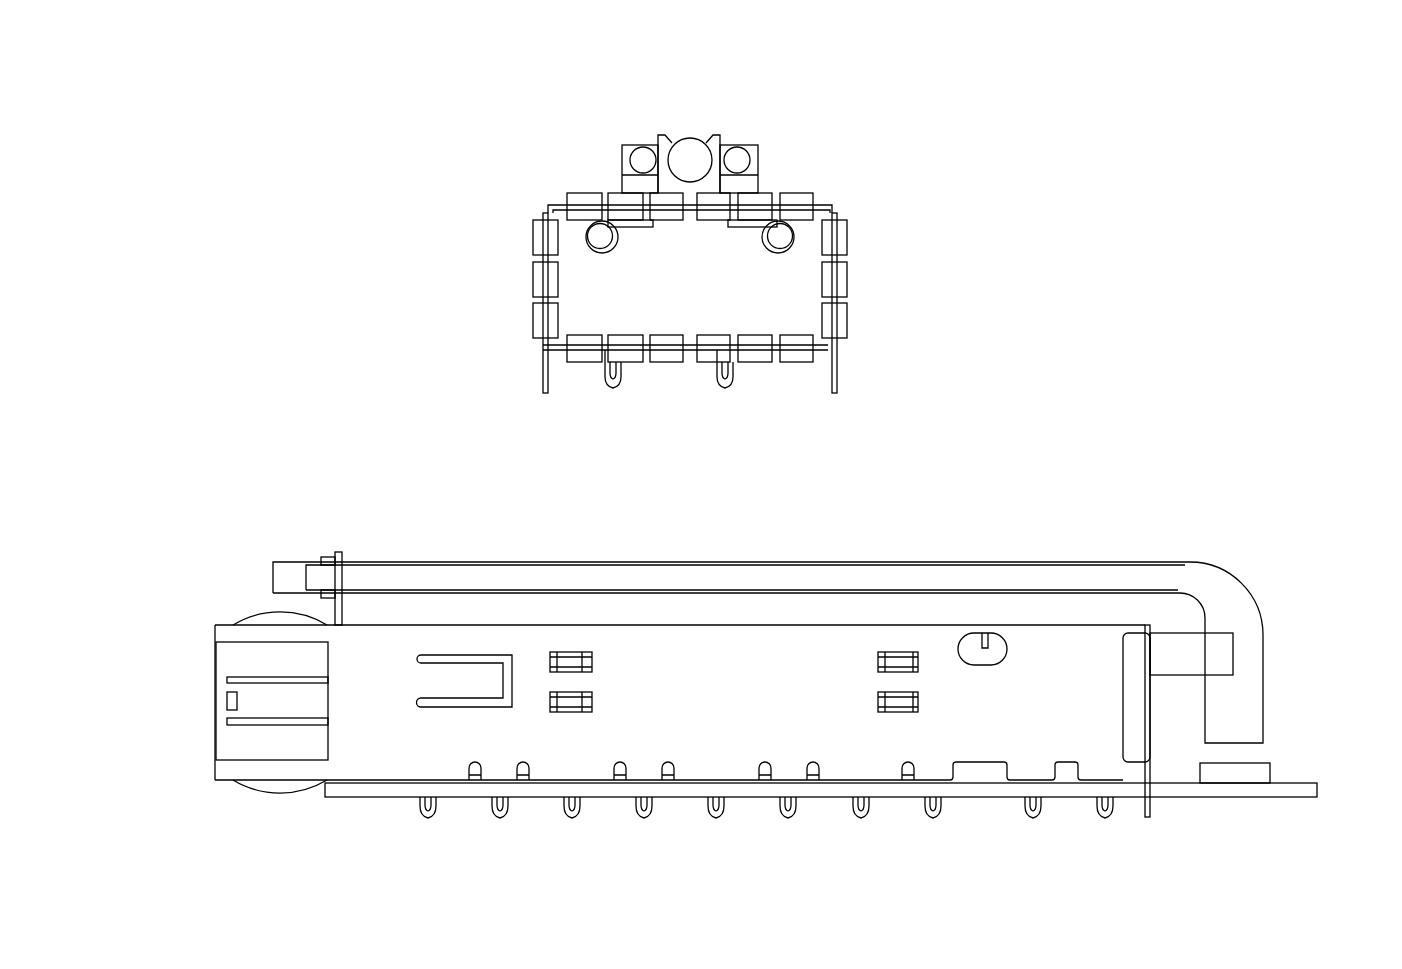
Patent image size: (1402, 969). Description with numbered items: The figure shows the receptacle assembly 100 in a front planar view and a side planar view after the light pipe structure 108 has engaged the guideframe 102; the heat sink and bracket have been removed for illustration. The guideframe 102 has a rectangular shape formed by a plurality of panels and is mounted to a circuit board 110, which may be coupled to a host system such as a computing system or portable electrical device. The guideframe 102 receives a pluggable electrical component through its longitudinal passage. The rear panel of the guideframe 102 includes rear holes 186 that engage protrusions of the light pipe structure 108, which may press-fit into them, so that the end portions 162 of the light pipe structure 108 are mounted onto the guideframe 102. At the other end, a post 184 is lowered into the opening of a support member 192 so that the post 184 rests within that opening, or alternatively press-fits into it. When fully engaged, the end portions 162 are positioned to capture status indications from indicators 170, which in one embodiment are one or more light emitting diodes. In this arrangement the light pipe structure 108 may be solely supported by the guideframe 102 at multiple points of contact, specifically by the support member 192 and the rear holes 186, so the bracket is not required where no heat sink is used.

In FIG. 5, the receptacle assembly 100 is at (538, 56).
In FIG. 6, the receptacle assembly 100 is at (251, 467).
In FIG. 5, the guideframe 102 is at (828, 348).
In FIG. 6, the guideframe 102 is at (713, 713).
In FIG. 5, the light pipe structure 108 is at (601, 140).
In FIG. 6, the light pipe structure 108 is at (661, 550).
In FIG. 6, the circuit board 110 is at (1305, 784).
In FIG. 6, the end portions 162 is at (1261, 578).
In FIG. 6, the status indicators 170 is at (1258, 762).
In FIG. 5, the post 184 is at (689, 158).
In FIG. 5, the rear holes 186 is at (588, 250).
In FIG. 5, the support member 192 is at (667, 187).
In FIG. 6, the support member 192 is at (342, 608).